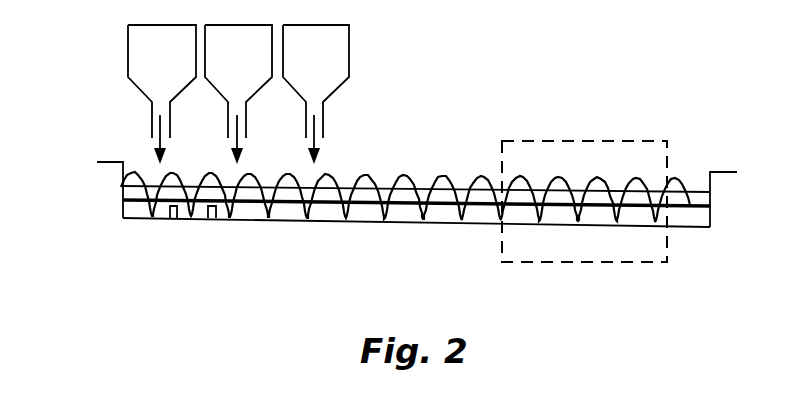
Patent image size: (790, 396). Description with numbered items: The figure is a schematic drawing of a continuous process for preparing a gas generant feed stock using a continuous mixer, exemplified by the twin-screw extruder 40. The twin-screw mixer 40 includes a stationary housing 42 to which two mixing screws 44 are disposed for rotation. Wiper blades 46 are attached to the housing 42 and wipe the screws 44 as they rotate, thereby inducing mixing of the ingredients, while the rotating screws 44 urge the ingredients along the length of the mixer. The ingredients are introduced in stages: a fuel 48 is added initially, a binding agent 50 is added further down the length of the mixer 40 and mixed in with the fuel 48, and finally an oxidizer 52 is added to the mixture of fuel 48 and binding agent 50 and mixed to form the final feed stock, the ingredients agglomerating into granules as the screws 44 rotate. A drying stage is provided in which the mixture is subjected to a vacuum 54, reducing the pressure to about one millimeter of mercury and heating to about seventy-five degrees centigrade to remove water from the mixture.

The twin-screw extruder 40 is at (116, 207).
The housing 42 is at (297, 222).
The mixing screws 44 is at (195, 218).
The wiper blades 46 is at (210, 218).
The fuel 48 is at (177, 61).
The binding agent 50 is at (254, 61).
The oxidizer 52 is at (331, 61).
The vacuum 54 is at (548, 139).